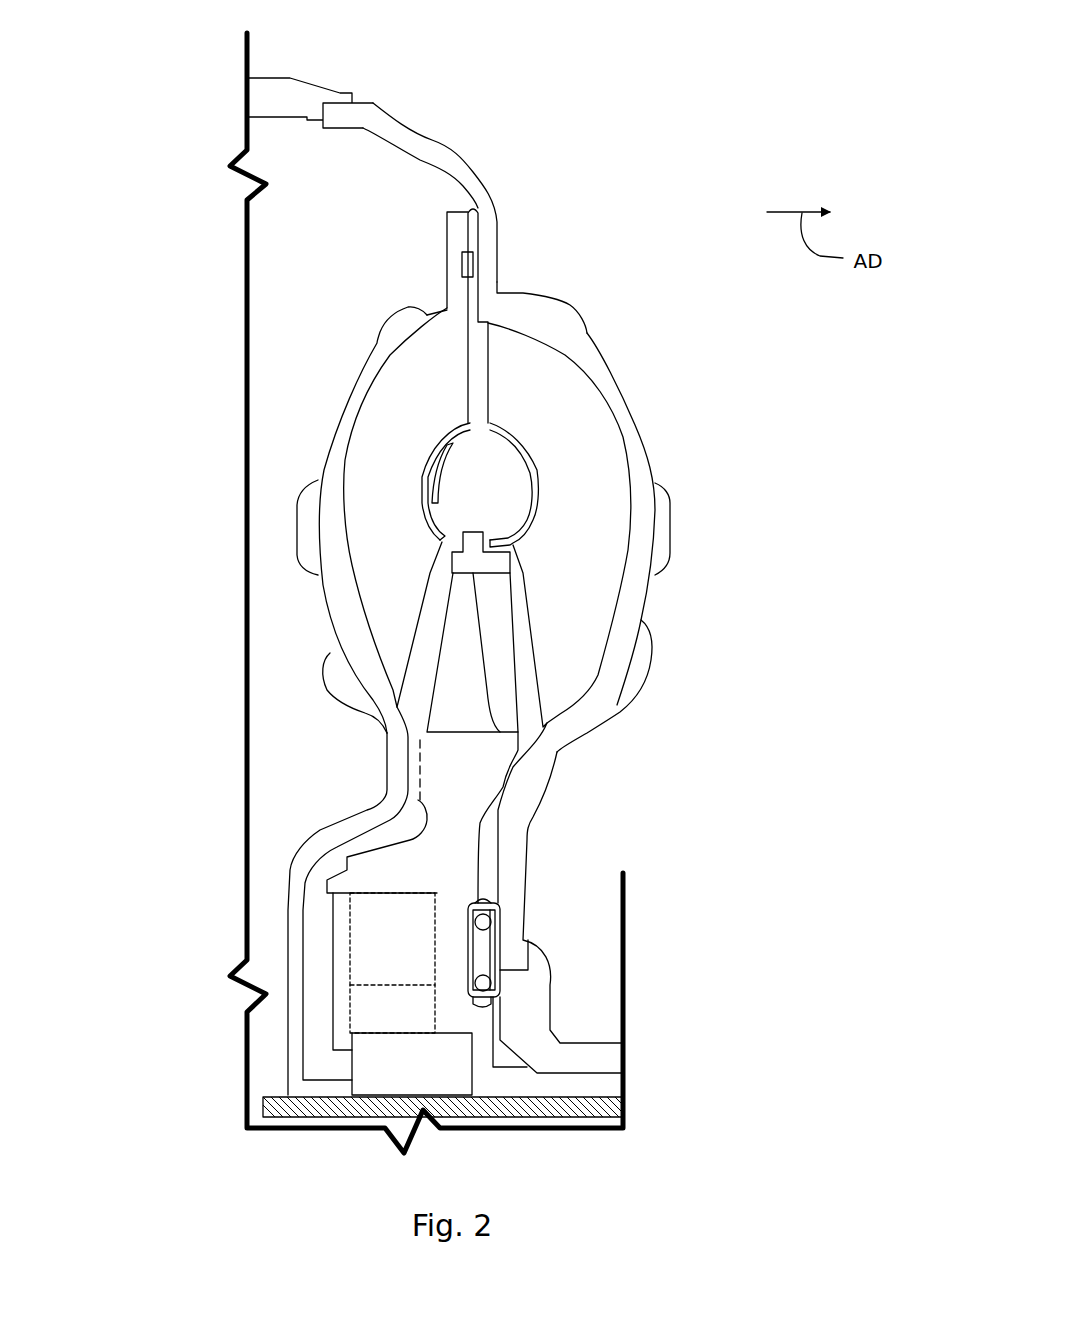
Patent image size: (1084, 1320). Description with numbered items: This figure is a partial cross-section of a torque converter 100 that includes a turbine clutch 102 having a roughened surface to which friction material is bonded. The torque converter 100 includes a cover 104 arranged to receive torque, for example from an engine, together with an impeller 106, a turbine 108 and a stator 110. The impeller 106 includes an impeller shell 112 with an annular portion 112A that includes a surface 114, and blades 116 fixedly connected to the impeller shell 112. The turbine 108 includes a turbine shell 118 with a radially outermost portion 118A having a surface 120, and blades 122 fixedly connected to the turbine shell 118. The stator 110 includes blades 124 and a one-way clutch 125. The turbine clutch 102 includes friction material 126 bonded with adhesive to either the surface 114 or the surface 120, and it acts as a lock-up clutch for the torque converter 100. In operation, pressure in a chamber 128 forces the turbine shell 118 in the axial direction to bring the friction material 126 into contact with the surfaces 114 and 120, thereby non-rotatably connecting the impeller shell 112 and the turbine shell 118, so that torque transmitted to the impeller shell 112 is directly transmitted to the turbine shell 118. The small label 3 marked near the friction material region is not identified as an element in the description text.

The torque converter 100 is at (695, 120).
The turbine clutch 102 is at (520, 274).
The cover 104 is at (280, 77).
The impeller 106 is at (668, 469).
The turbine 108 is at (308, 468).
The stator 110 is at (547, 656).
The impeller shell 112 is at (617, 407).
The annular portion 112A is at (487, 282).
The surface 114 is at (480, 243).
The blades 116 is at (540, 390).
The turbine shell 118 is at (317, 538).
The radially outermost portion 118A is at (462, 262).
The surface 120 is at (447, 240).
The blades 122 is at (370, 515).
The blades 124 is at (487, 597).
The one-way clutch 125 is at (388, 923).
The friction material 126 is at (473, 230).
The chamber 128 is at (284, 627).
The section line reference 3 is at (462, 273).